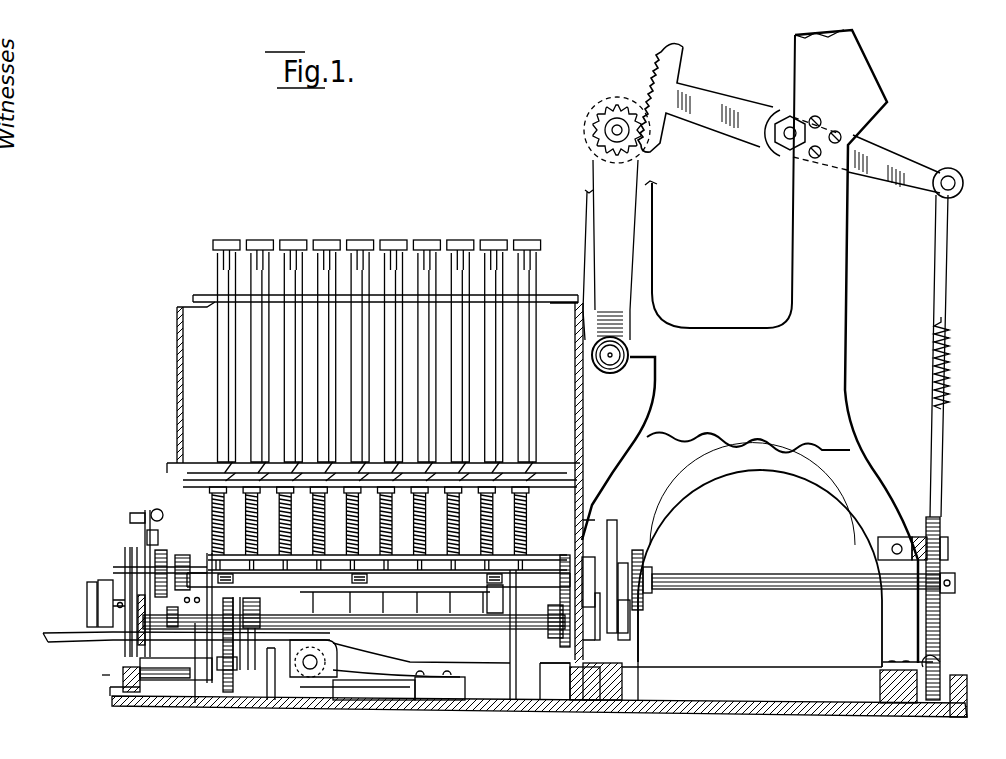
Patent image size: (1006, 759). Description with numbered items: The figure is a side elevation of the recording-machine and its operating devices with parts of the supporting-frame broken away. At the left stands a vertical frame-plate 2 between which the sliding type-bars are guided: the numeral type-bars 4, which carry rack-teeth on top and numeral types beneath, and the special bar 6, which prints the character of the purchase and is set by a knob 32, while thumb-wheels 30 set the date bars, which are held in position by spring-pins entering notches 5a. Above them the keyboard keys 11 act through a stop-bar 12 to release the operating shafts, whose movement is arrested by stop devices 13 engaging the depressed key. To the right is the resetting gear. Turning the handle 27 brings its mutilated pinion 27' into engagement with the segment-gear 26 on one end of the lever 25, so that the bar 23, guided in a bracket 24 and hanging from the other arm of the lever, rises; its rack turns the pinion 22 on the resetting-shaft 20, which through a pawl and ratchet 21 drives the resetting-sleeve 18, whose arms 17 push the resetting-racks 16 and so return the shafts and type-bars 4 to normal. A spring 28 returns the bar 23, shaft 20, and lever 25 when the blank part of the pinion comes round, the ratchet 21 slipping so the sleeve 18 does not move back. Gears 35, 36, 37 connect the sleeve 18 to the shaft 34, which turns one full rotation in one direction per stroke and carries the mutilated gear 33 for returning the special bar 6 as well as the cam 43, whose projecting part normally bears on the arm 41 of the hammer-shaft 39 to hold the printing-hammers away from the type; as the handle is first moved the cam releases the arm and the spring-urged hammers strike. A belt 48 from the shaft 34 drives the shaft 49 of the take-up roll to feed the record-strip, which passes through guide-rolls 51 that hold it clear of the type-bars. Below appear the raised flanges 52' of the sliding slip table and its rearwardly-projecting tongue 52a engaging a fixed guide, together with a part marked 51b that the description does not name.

The vertical frame-plate 2 is at (116, 645).
The numeral type-bars 4 is at (200, 678).
The notches 5a is at (137, 645).
The special bar 6 is at (182, 683).
The keys 11 is at (310, 393).
The stop-bar 12 is at (378, 582).
The stop devices 13 is at (446, 598).
The resetting-racks 16 is at (610, 633).
The arms 17 is at (614, 555).
The resetting-sleeve 18 is at (593, 557).
The resetting-shaft 20 is at (790, 574).
The ratchet 21 is at (654, 600).
The pinion 22 is at (954, 575).
The bar 23 is at (943, 453).
The bracket 24 is at (888, 536).
The lever 25 is at (897, 183).
The segment-gear 26 is at (651, 58).
The handle 27 is at (636, 266).
The mutilated pinion 27' is at (616, 120).
The spring 28 is at (932, 374).
The thumb-wheels 30 is at (108, 584).
The knob 32 is at (86, 605).
The mutilated gear 33 is at (172, 609).
The shaft 34 is at (360, 629).
The gear 35 is at (563, 558).
The gear 36 is at (556, 596).
The gear 37 is at (560, 650).
The hammer-shaft 39 is at (340, 655).
The arm 41 is at (275, 698).
The cam 43 is at (250, 610).
The belt 48 is at (226, 694).
The shaft 49 is at (162, 685).
The guide-rolls 51 is at (142, 653).
The block 51b is at (478, 678).
The raised flanges 52' is at (186, 646).
The tongue 52a is at (402, 655).